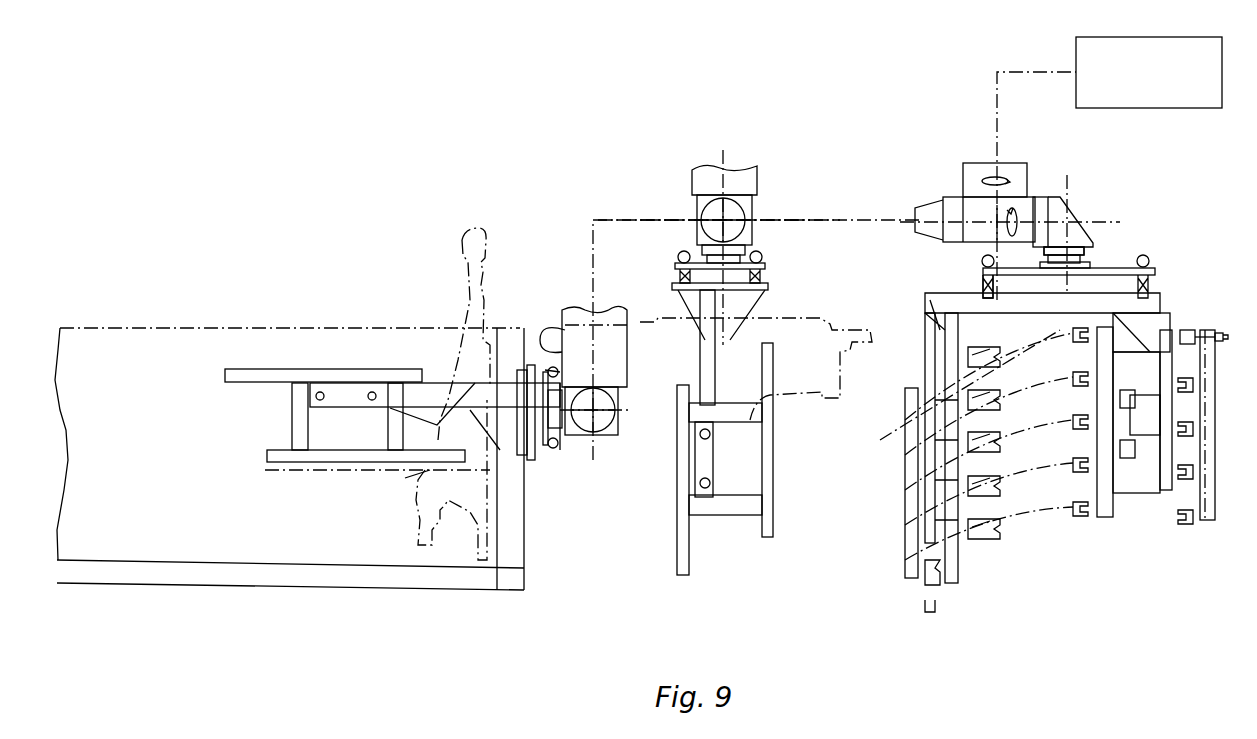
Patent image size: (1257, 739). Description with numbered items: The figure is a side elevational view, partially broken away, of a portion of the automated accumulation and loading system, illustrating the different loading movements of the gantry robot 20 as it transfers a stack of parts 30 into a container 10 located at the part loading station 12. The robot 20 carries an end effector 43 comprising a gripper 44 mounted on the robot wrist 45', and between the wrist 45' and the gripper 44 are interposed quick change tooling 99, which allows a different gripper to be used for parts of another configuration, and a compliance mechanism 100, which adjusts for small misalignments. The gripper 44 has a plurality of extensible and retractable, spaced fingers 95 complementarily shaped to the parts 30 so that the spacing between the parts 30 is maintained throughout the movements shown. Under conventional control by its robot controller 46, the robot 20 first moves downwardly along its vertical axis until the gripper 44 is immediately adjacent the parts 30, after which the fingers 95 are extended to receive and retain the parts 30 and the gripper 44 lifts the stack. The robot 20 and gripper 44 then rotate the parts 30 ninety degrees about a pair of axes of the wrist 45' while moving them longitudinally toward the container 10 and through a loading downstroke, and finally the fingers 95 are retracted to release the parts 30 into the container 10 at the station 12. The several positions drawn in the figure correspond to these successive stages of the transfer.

The container 10 is at (530, 543).
The part loading station 12 is at (556, 497).
The gantry robot 20 is at (594, 298).
The parts 30 is at (458, 240).
The end effector 43 is at (1226, 324).
The gripper 44 is at (283, 370).
The wrist 45' is at (800, 284).
The robot controller 46 is at (1200, 108).
The fingers 95 is at (912, 580).
The quick change tooling 99 is at (1095, 258).
The compliance mechanism 100 is at (980, 285).